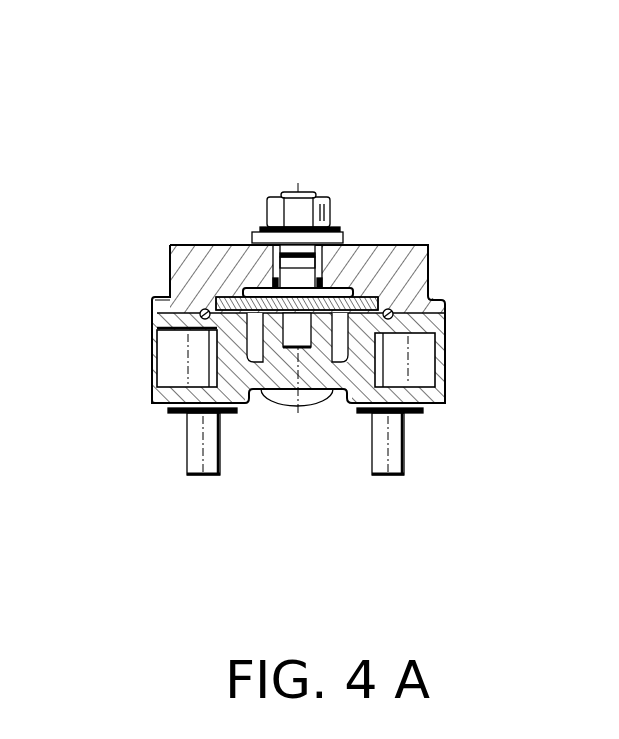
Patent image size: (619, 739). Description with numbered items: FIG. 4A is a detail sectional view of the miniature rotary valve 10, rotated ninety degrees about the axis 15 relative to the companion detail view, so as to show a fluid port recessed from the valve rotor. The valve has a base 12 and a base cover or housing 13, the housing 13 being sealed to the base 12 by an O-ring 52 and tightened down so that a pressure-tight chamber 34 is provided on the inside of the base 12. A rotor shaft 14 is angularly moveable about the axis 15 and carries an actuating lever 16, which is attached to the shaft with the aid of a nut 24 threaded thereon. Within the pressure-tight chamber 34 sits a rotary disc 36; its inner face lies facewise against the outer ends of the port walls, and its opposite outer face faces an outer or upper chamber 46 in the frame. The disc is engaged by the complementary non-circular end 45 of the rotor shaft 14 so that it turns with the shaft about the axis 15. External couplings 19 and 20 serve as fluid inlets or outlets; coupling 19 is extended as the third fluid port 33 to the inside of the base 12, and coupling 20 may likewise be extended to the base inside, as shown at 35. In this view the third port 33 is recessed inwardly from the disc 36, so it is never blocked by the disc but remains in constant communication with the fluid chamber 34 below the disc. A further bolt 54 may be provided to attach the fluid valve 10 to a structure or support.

The miniature rotary valve 10 is at (246, 328).
The base 12 is at (487, 485).
The base cover or housing 13 is at (203, 258).
The rotary shaft or rotor shaft 14 is at (197, 151).
The axis 15 is at (267, 478).
The actuating handle or lever 16 is at (428, 147).
The fluid inlet or outlet / external coupling 19 is at (489, 341).
The fluid inlet or outlet / external coupling 20 is at (132, 340).
The nut 24 is at (364, 139).
The third fluid port 33 is at (280, 457).
The pressure-tight chamber 34 is at (410, 259).
The extension of fluid inlet or outlet 20 to base inside 35 is at (143, 432).
The rotary disc 36 is at (378, 228).
The non-circular end of the rotor shaft 45 is at (254, 386).
The outer or upper chamber 46 is at (111, 235).
The O-ring 52 is at (408, 390).
The bolt 54 is at (133, 481).